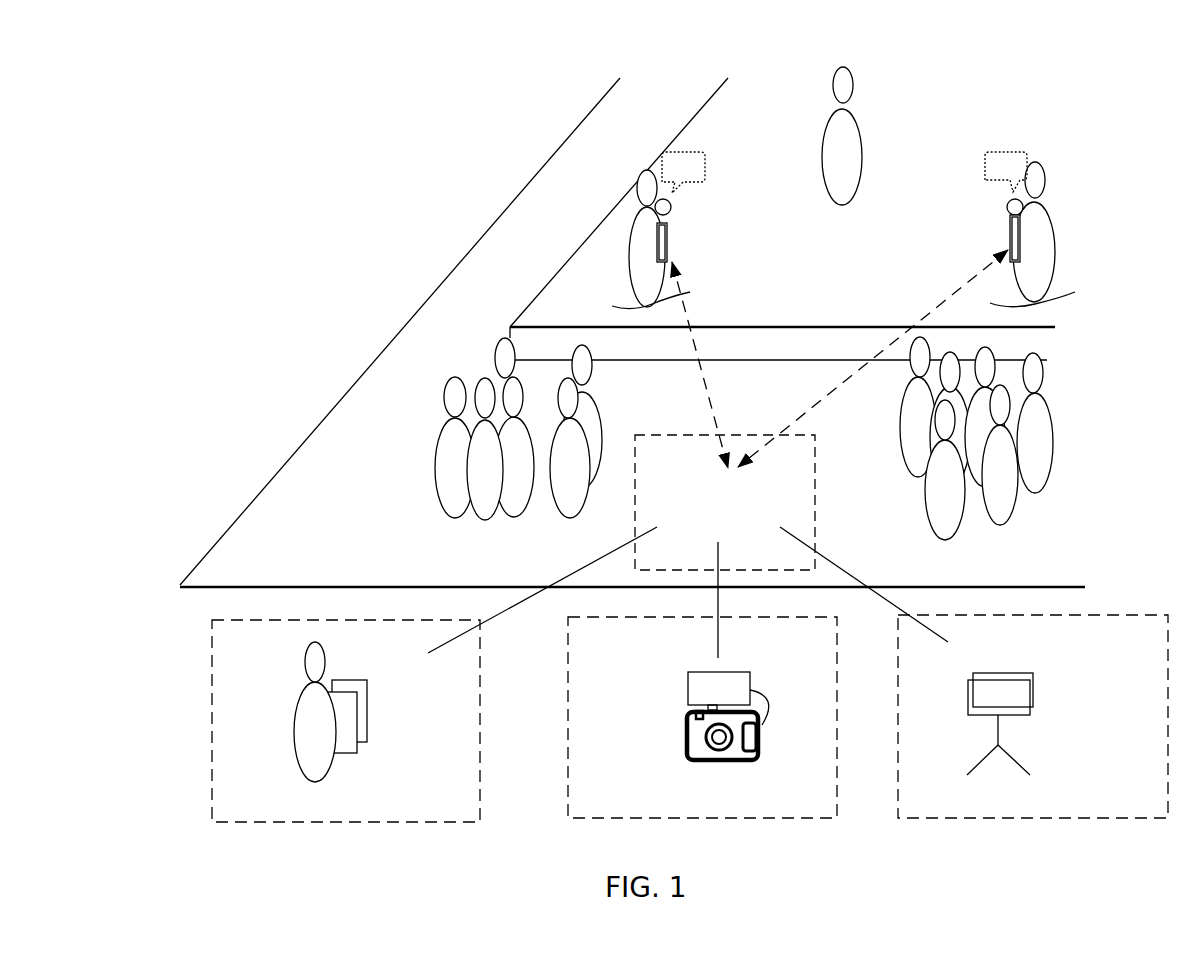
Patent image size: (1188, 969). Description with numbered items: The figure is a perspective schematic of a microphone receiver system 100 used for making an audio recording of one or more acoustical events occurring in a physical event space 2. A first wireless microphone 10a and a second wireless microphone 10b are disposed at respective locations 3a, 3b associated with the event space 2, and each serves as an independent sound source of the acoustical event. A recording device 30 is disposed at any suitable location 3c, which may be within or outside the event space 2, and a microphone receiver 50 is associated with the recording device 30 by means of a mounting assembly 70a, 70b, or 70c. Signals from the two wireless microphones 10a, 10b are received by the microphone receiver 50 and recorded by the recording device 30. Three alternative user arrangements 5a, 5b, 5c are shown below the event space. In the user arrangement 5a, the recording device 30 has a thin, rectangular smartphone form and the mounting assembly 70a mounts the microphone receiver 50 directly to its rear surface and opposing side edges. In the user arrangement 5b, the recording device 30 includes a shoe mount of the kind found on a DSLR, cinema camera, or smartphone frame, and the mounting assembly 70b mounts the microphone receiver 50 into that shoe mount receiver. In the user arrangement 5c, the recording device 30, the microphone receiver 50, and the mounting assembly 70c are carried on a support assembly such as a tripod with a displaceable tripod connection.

The microphone receiver system 100 is at (353, 103).
The event space 2 is at (542, 205).
The location of first wireless microphone 3a is at (692, 290).
The location of second wireless microphone 3b is at (1070, 285).
The location of recording device 3c is at (842, 527).
The first wireless microphone 10a is at (661, 226).
The second wireless microphone 10b is at (879, 329).
The user arrangement 5a is at (258, 659).
The user arrangement 5b is at (612, 657).
The user arrangement 5c is at (1140, 655).
The recording device 30 is at (719, 741).
The microphone receiver 50 is at (800, 677).
The mounting assembly 70a is at (368, 712).
The mounting assembly 70b is at (683, 710).
The mounting assembly 70c is at (993, 719).